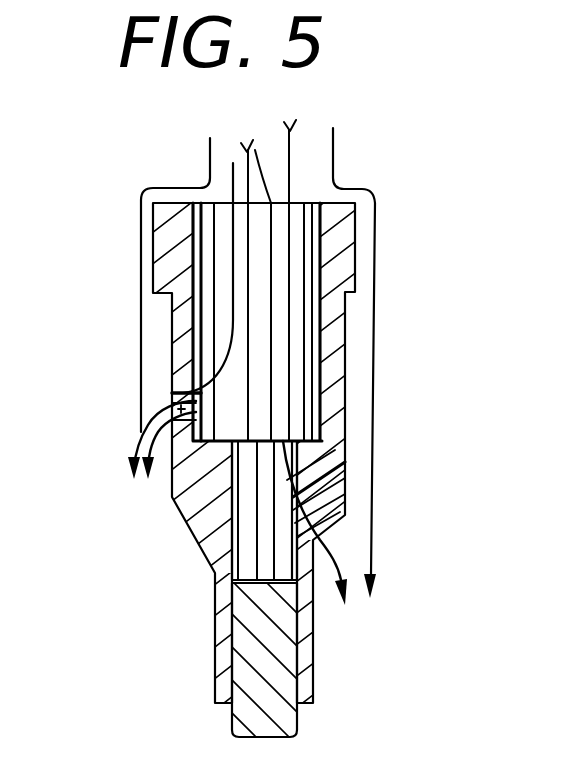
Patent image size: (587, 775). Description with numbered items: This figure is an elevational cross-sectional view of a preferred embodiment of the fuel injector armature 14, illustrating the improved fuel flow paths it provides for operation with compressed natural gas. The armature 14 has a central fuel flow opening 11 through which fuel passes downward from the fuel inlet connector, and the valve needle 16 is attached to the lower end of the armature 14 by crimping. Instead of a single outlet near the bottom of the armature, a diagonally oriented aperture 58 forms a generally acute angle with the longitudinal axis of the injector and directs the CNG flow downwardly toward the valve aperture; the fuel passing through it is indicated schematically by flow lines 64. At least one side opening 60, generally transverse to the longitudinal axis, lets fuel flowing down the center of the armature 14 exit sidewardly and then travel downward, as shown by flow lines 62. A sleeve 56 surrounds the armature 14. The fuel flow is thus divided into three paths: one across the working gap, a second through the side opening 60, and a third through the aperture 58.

The central fuel flow opening 11 is at (303, 248).
The armature 14 is at (348, 330).
The valve needle 16 is at (290, 717).
The outer sleeve 56 is at (171, 186).
The diagonally oriented aperture 58 is at (338, 468).
The side opening 60 is at (187, 390).
The flow lines 62 is at (410, 395).
The flow lines 64 is at (330, 532).